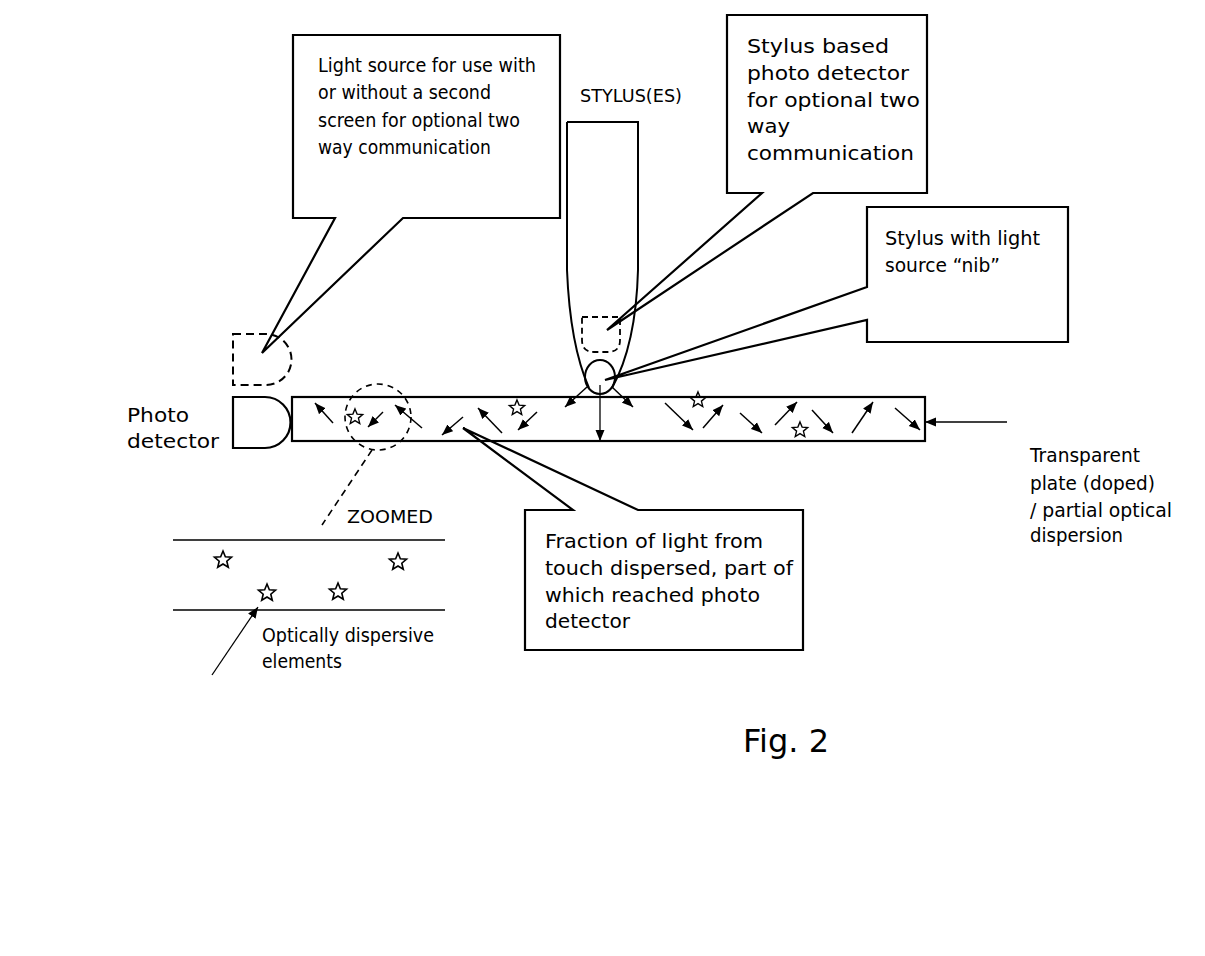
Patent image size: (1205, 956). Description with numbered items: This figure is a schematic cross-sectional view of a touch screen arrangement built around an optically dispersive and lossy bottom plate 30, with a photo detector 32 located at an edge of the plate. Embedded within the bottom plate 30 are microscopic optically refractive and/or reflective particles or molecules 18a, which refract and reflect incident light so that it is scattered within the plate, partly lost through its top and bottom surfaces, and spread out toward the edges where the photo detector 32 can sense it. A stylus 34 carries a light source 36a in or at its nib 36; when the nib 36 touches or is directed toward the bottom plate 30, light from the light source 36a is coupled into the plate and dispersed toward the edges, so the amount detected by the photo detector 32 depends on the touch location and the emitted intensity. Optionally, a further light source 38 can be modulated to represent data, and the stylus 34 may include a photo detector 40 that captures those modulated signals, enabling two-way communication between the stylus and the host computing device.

The optically refractive and/or reflective particles or molecules 18a is at (793, 433).
The bottom plate 30 is at (885, 428).
The photo detector 32 is at (252, 435).
The stylus 34 is at (581, 290).
The nib 36 is at (610, 380).
The light source 36a is at (600, 418).
The further light source 38 is at (253, 367).
The photo detector 40 is at (620, 330).